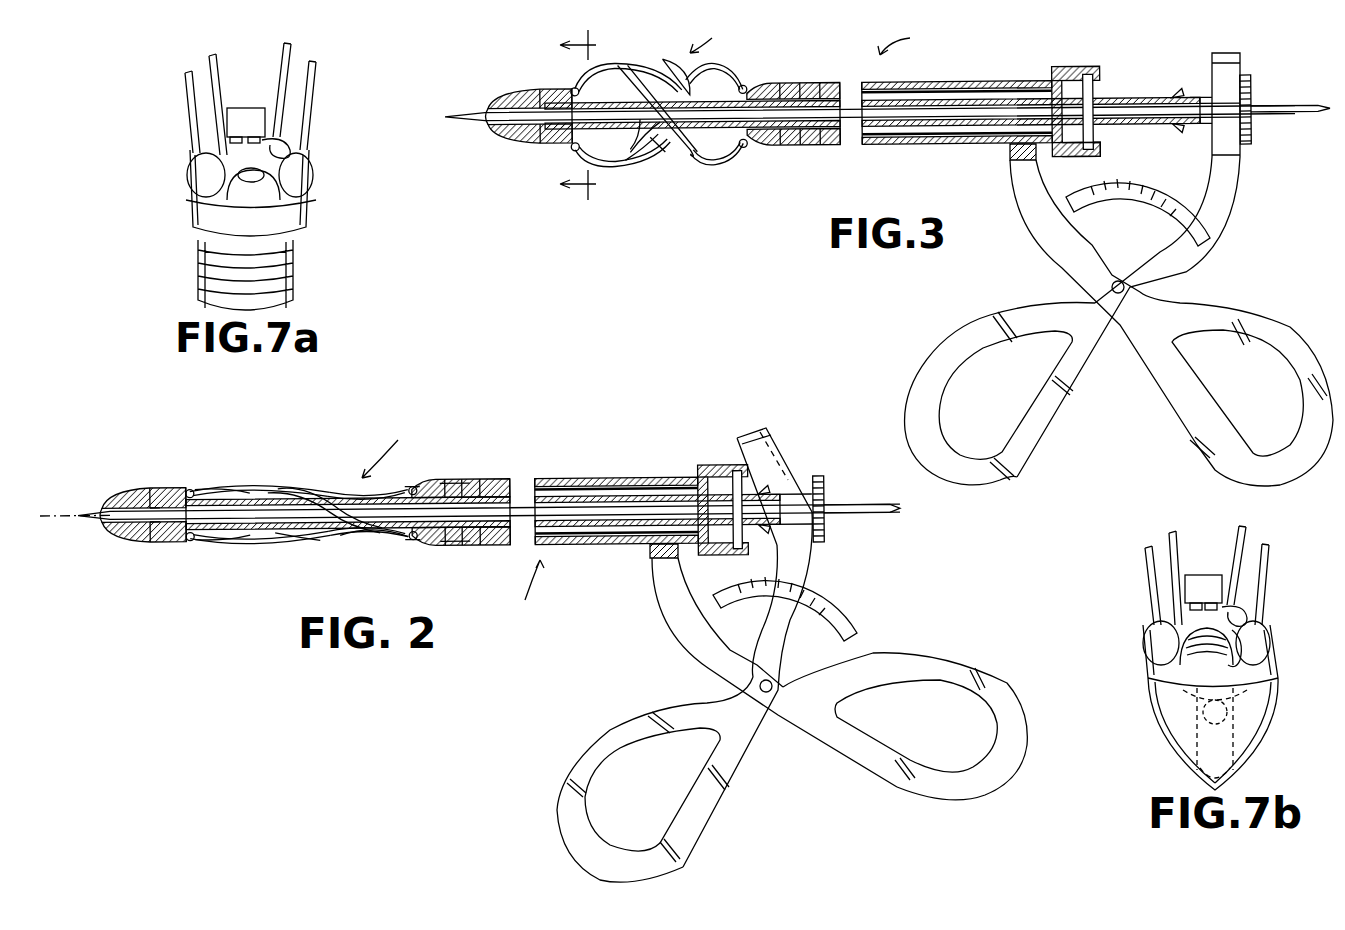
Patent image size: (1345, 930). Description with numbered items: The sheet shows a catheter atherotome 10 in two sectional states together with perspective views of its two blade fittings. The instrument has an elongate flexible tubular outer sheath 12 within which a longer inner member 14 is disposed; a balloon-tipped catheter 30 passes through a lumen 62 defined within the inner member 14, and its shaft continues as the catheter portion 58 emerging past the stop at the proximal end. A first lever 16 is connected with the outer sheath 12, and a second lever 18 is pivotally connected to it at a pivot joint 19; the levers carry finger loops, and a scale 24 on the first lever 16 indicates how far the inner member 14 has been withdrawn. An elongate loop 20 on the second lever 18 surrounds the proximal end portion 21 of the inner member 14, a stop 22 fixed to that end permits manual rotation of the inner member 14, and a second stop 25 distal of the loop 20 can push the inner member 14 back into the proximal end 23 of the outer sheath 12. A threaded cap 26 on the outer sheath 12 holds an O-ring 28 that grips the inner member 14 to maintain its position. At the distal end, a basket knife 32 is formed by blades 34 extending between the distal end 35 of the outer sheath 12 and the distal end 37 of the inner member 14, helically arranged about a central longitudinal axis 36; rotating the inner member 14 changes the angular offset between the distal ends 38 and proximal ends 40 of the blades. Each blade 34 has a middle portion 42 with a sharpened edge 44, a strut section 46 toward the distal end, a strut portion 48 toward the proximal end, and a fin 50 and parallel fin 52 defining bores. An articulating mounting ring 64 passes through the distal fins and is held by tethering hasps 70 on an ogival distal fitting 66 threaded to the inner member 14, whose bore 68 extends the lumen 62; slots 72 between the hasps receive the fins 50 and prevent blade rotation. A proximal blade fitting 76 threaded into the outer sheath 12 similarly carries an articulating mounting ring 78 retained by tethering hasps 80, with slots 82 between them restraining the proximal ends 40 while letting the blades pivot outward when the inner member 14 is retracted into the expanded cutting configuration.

In FIG. 3, the catheter atherotome 10 is at (909, 41).
In FIG. 2, the catheter atherotome 10 is at (521, 596).
In FIG. 3, the outer sheath 12 is at (925, 143).
In FIG. 2, the outer sheath 12 is at (566, 478).
In FIG. 3, the inner member 14 is at (1157, 100).
In FIG. 2, the inner member 14 is at (230, 535).
In FIG. 3, the first lever 16 is at (1032, 203).
In FIG. 2, the first lever 16 is at (668, 577).
In FIG. 3, the second lever 18 is at (1205, 198).
In FIG. 2, the second lever 18 is at (805, 583).
In FIG. 3, the pivot joint 19 is at (1125, 287).
In FIG. 2, the pivot joint 19 is at (760, 687).
In FIG. 3, the elongate loop 20 is at (1243, 68).
In FIG. 2, the elongate loop 20 is at (772, 455).
In FIG. 3, the proximal end portion of the inner member 21 is at (1253, 110).
In FIG. 3, the stop 22 is at (1253, 92).
In FIG. 2, the stop 22 is at (826, 492).
In FIG. 3, the proximal end of the outer sheath 23 is at (1085, 156).
In FIG. 3, the scale 24 is at (1205, 244).
In FIG. 2, the scale 24 is at (845, 628).
In FIG. 3, the second stop 25 is at (1182, 130).
In FIG. 2, the second stop 25 is at (772, 530).
In FIG. 3, the cap 26 is at (1080, 68).
In FIG. 2, the cap 26 is at (722, 466).
In FIG. 3, the O-ring 28 is at (1095, 84).
In FIG. 2, the O-ring 28 is at (745, 505).
In FIG. 3, the balloon-tipped catheter 30 is at (478, 110).
In FIG. 2, the balloon-tipped catheter 30 is at (95, 516).
In FIG. 3, the basket knife 32 is at (715, 39).
In FIG. 2, the basket knife 32 is at (390, 446).
In FIG. 2, the blades 34 is at (362, 538).
In FIG. 2, the distal end of the outer sheath 35 is at (452, 480).
In FIG. 2, the central longitudinal axis 36 is at (44, 510).
In FIG. 2, the distal end of the inner member 37 is at (147, 530).
In FIG. 2, the distal ends of the blades 38 is at (190, 486).
In FIG. 7b, the distal ends of the blades 38 is at (1160, 672).
In FIG. 2, the proximal ends of the blades 40 is at (413, 539).
In FIG. 7a, the proximal ends of the blades 40 is at (215, 200).
In FIG. 3, the middle portion 42 is at (662, 128).
In FIG. 2, the middle portion 42 is at (285, 490).
In FIG. 3, the sharpened edge 44 is at (690, 76).
In FIG. 2, the sharpened edge 44 is at (315, 498).
In FIG. 3, the strut section 46 is at (618, 150).
In FIG. 2, the strut section 46 is at (230, 482).
In FIG. 7b, the strut section 46 is at (1150, 590).
In FIG. 3, the strut portion 48 is at (730, 148).
In FIG. 2, the strut portion 48 is at (386, 541).
In FIG. 7a, the strut portion 48 is at (190, 122).
In FIG. 7b, the fin 50 is at (1210, 575).
In FIG. 7a, the fin 52 is at (290, 122).
In FIG. 3, the needle 58 is at (1298, 116).
In FIG. 3, the lumen 62 is at (848, 145).
In FIG. 2, the lumen 62 is at (516, 545).
In FIG. 3, the articulating mounting ring 64 is at (581, 88).
In FIG. 2, the articulating mounting ring 64 is at (190, 538).
In FIG. 7b, the articulating mounting ring 64 is at (1207, 588).
In FIG. 3, the distal fitting 66 is at (533, 141).
In FIG. 2, the distal fitting 66 is at (125, 539).
In FIG. 7b, the distal fitting 66 is at (1262, 742).
In FIG. 3, the bore 68 is at (505, 127).
In FIG. 2, the bore 68 is at (152, 486).
In FIG. 7b, the bore 68 is at (1228, 775).
In FIG. 3, the tethering hasps 70 is at (648, 150).
In FIG. 2, the tethering hasps 70 is at (196, 486).
In FIG. 7b, the tethering hasps 70 is at (1255, 640).
In FIG. 7b, the slots 72 is at (1258, 680).
In FIG. 3, the proximal blade fitting 76 is at (783, 84).
In FIG. 2, the proximal blade fitting 76 is at (479, 480).
In FIG. 7a, the proximal blade fitting 76 is at (290, 278).
In FIG. 3, the articulating mounting ring 78 is at (749, 140).
In FIG. 2, the articulating mounting ring 78 is at (425, 538).
In FIG. 7a, the articulating mounting ring 78 is at (246, 108).
In FIG. 2, the tethering hasps 80 is at (416, 484).
In FIG. 7a, the tethering hasps 80 is at (300, 170).
In FIG. 7a, the slots 82 is at (310, 212).